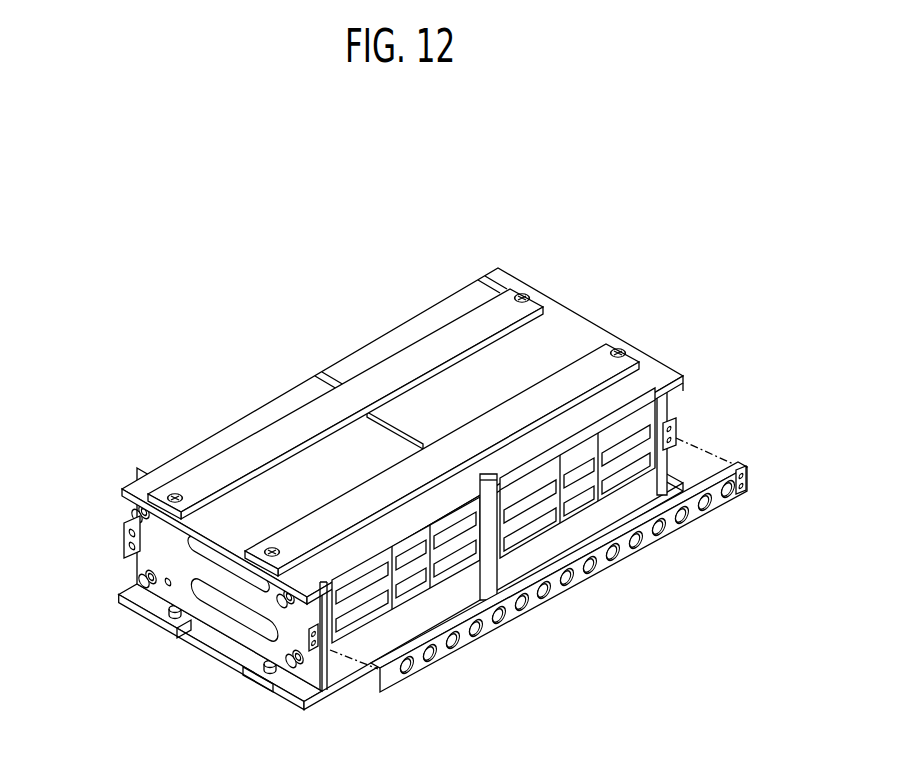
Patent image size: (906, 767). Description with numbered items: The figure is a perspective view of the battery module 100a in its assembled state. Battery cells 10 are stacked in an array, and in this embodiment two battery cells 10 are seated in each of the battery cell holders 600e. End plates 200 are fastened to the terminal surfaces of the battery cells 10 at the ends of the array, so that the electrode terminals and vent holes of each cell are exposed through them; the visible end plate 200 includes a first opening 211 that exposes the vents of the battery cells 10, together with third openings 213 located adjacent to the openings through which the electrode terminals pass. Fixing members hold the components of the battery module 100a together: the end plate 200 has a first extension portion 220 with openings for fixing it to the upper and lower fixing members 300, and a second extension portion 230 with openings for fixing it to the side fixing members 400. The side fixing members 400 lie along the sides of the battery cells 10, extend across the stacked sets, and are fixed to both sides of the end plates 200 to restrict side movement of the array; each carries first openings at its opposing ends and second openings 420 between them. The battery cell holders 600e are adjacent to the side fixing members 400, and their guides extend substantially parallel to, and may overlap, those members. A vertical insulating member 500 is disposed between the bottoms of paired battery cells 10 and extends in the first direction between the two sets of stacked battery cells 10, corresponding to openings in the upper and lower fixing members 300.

The battery cell 10 is at (406, 316).
The battery module 100a is at (182, 282).
The end plate 200 is at (595, 321).
The first opening 211 is at (232, 606).
The third opening 213 is at (166, 589).
The first extension portion 220 is at (305, 688).
The second extension portion 230 is at (124, 544).
The upper and lower fixing member 300 is at (272, 420).
The side fixing member 400 is at (568, 542).
The second opening 420 is at (712, 502).
The vertical insulating member 500 is at (398, 422).
The battery cell holder 600e is at (604, 498).